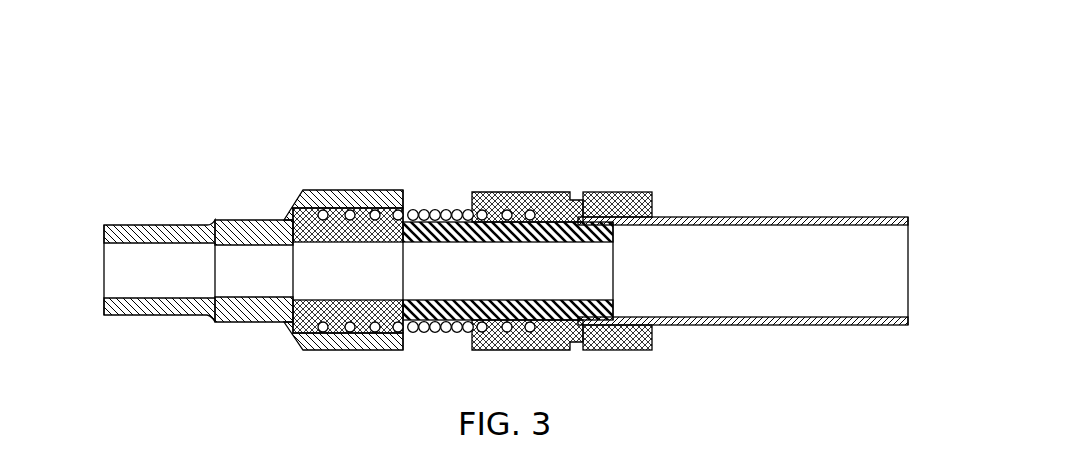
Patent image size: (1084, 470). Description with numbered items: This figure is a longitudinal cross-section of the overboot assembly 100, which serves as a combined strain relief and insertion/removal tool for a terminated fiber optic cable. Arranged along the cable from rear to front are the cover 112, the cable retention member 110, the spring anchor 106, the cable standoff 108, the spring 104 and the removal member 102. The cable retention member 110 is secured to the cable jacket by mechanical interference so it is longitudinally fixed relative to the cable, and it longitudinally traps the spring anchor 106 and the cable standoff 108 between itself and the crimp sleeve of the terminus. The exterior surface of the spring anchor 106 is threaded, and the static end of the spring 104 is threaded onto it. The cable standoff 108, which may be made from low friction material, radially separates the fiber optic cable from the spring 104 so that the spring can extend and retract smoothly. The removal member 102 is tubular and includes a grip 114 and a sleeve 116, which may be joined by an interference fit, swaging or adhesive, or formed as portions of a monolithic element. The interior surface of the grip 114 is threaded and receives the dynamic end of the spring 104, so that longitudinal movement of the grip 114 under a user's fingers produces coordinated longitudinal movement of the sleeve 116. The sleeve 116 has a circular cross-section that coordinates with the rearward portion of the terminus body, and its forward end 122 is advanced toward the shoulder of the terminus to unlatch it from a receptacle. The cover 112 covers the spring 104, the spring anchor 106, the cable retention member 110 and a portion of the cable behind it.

The overboot assembly 100 is at (541, 124).
The removal member 102 is at (671, 129).
The spring 104 is at (454, 214).
The spring anchor 106 is at (324, 211).
The cable standoff 108 is at (439, 217).
The cable retention member 110 is at (283, 226).
The cover 112 is at (175, 224).
The grip 114 is at (624, 189).
The sleeve 116 is at (769, 216).
The forward end 122 is at (910, 216).